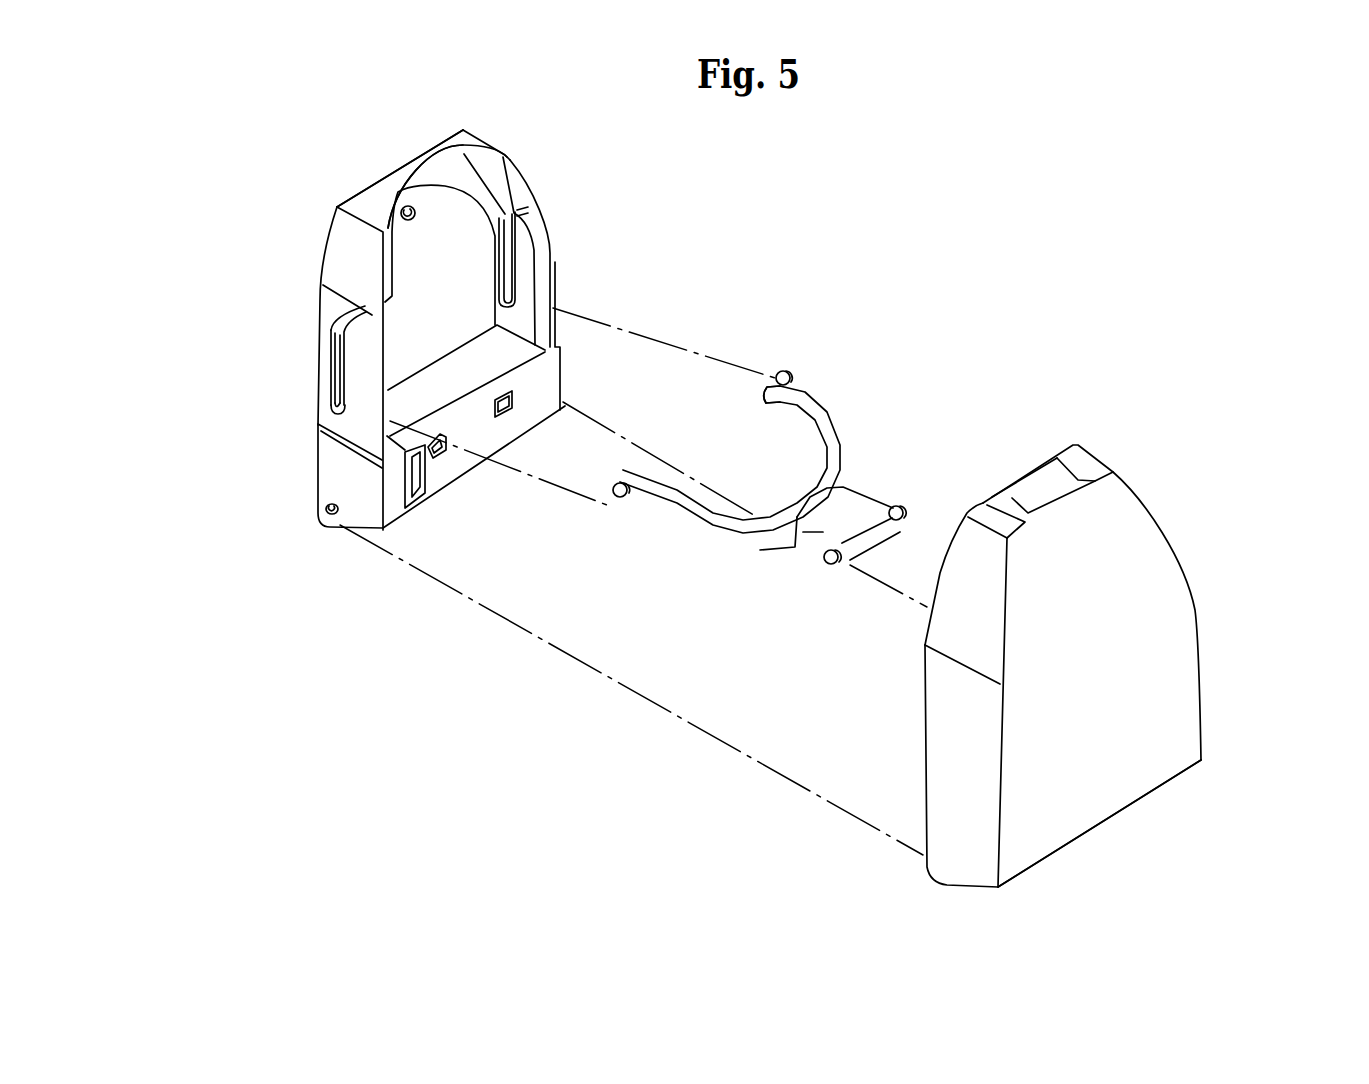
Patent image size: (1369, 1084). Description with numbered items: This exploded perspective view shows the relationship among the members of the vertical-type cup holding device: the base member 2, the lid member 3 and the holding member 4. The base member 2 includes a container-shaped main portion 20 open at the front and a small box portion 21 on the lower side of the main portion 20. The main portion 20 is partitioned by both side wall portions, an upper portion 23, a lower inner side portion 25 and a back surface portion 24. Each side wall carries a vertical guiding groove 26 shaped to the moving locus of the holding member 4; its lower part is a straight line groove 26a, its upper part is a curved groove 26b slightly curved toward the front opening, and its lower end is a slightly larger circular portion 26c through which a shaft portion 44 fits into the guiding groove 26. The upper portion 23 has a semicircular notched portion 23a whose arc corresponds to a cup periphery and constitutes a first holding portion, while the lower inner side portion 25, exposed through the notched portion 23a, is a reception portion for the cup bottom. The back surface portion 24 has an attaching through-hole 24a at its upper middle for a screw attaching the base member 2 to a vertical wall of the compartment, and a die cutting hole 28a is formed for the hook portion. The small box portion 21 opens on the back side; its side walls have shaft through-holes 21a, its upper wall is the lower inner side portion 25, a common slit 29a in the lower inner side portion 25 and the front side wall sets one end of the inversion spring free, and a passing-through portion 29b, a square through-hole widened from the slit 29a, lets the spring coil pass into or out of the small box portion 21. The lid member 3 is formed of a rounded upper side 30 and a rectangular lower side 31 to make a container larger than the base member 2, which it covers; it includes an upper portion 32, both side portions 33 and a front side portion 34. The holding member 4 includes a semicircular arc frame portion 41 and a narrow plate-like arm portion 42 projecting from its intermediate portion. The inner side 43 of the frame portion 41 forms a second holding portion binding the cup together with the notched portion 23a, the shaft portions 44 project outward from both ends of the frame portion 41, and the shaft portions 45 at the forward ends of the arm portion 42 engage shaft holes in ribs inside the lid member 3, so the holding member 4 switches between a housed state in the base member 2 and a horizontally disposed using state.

The base member 2 is at (699, 248).
The main portion 20 is at (553, 297).
The small box portion 21 is at (565, 385).
The shaft through-holes 21a is at (323, 524).
The upper portion 23 is at (360, 204).
The notched portion 23a is at (433, 170).
The back surface portion 24 is at (473, 257).
The attaching through-hole 24a is at (417, 222).
The lower inner side portion 25 is at (497, 368).
The guiding groove 26 is at (238, 322).
The straight line groove 26a is at (335, 375).
The curved groove 26b is at (333, 333).
The circular portion 26c is at (340, 406).
The die cutting hole 28a is at (448, 437).
The slit 29a is at (435, 460).
The passing-through portion 29b is at (418, 497).
The lid member 3 is at (1278, 540).
The rounded upper side 30 is at (1152, 540).
The rectangular lower side 31 is at (1185, 685).
The upper portion 32 is at (1047, 473).
The side portions 33 is at (1203, 723).
The front side portion 34 is at (1122, 517).
The holding member 4 is at (690, 603).
The frame portion 41 is at (740, 550).
The arm portion 42 is at (802, 552).
The inner side 43 is at (793, 413).
The shaft portions 44 is at (797, 372).
The shaft portions 45 is at (905, 512).